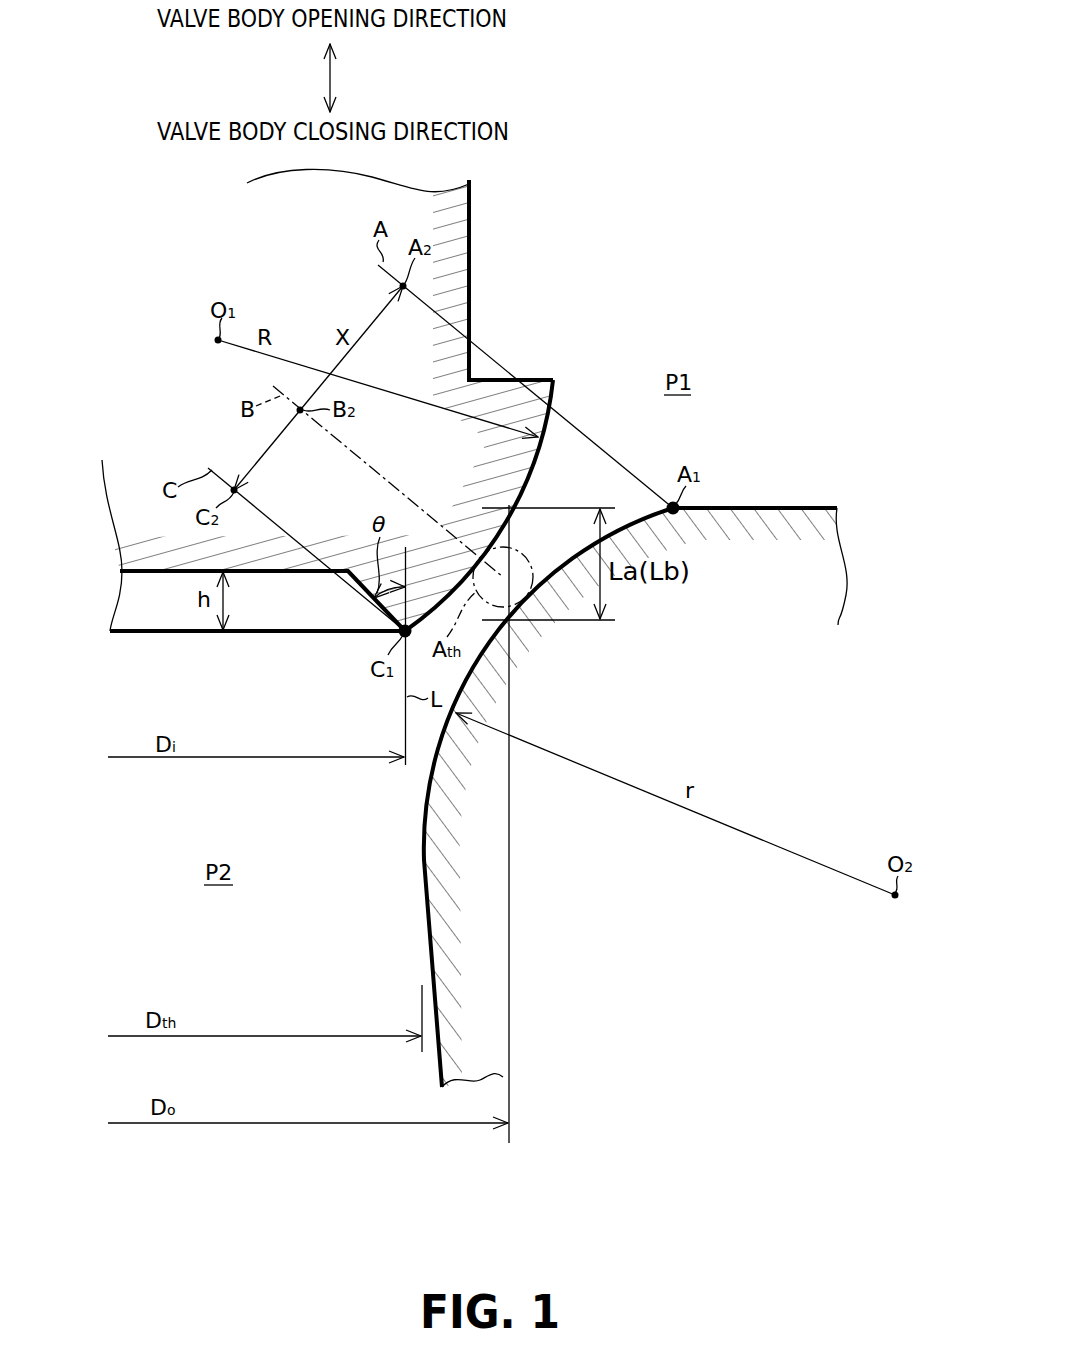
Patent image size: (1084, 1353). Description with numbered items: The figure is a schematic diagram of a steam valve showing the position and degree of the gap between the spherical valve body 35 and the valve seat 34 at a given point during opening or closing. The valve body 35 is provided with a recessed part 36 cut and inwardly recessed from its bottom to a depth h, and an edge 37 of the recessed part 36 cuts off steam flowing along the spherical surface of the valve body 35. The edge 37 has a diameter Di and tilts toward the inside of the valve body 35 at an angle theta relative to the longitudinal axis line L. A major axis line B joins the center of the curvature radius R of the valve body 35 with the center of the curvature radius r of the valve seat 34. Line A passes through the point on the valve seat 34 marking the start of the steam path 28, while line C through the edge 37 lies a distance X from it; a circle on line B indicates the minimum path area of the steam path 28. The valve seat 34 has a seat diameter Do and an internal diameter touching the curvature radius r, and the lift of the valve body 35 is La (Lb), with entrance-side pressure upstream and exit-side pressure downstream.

The steam path 28 is at (585, 490).
The valve seat 34 is at (425, 832).
The spherical valve body 35 is at (455, 237).
The recessed part 36 is at (279, 612).
The edge of the recessed part 37 is at (350, 588).